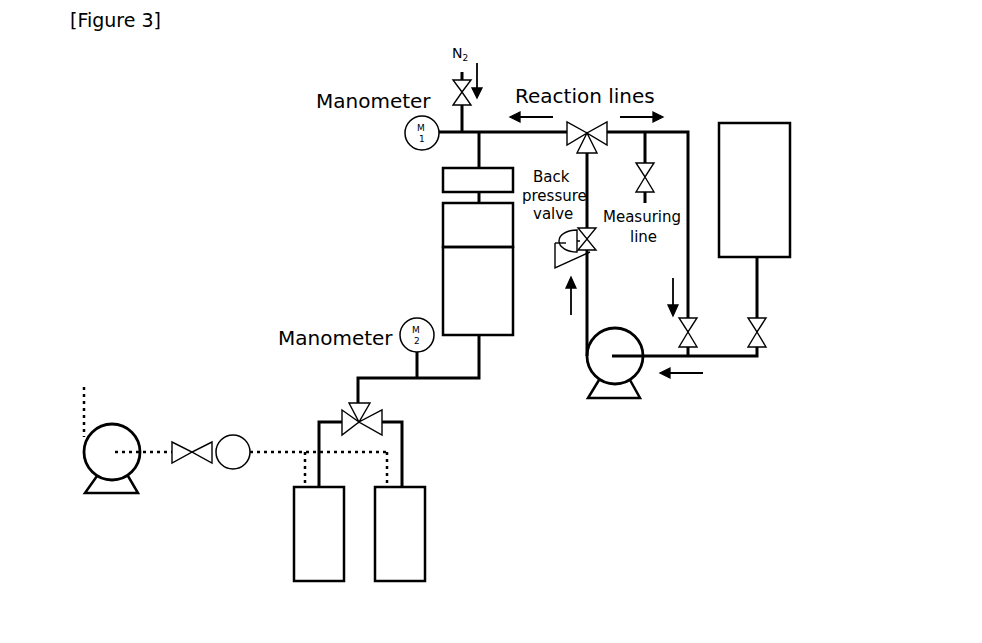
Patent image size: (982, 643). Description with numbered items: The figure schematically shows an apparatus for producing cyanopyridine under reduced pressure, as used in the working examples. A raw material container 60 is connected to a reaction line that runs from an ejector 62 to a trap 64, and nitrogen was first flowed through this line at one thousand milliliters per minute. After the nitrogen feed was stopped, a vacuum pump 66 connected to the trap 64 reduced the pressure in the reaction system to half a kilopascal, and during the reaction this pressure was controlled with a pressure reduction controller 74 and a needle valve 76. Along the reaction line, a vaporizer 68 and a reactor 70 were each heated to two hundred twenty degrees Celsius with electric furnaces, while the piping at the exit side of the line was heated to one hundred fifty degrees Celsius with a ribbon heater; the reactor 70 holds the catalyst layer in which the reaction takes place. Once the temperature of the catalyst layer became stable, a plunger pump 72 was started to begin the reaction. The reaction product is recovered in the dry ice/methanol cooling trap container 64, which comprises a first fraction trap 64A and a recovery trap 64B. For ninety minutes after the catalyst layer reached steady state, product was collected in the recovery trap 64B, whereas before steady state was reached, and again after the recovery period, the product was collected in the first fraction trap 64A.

The raw material container 60 is at (758, 142).
The ejector 62 is at (455, 178).
The trap 64 is at (420, 555).
The first fraction trap 64A is at (400, 532).
The recovery trap 64B is at (335, 570).
The vacuum pump 66 is at (112, 440).
The vaporizer 68 is at (463, 223).
The reactor 70 is at (468, 290).
The plunger pump 72 is at (623, 365).
The pressure reduction controller 74 is at (237, 443).
The needle valve 76 is at (195, 443).